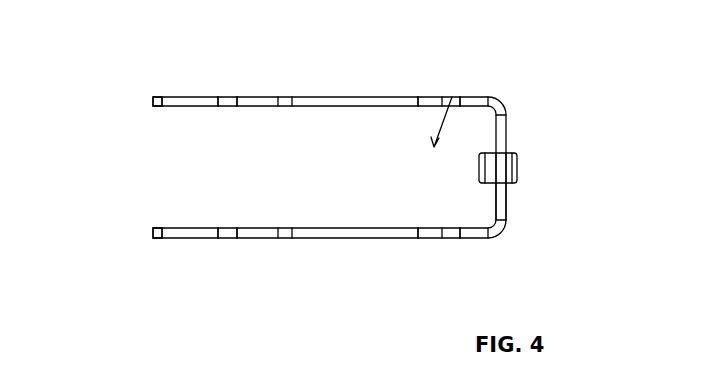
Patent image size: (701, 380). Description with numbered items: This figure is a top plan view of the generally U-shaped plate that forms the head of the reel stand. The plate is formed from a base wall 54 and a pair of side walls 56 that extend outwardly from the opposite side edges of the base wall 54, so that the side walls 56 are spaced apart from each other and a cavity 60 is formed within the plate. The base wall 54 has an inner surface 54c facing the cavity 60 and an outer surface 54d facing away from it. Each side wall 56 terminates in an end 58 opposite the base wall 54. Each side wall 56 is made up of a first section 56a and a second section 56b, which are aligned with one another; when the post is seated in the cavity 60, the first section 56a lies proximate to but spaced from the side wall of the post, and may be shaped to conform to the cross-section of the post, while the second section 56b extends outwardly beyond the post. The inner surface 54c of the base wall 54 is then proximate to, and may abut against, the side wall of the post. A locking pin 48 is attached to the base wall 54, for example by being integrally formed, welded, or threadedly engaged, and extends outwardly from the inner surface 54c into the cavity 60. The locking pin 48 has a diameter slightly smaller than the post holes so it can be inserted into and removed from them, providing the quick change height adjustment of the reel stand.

The locking pin 48 is at (517, 165).
The base wall 54 is at (507, 126).
The inner surface 54c is at (496, 190).
The outer surface 54d is at (507, 190).
The side wall 56 is at (367, 97).
The first section 56a is at (432, 97).
The second section 56b is at (244, 97).
The end 58 is at (150, 101).
The cavity 60 is at (452, 97).